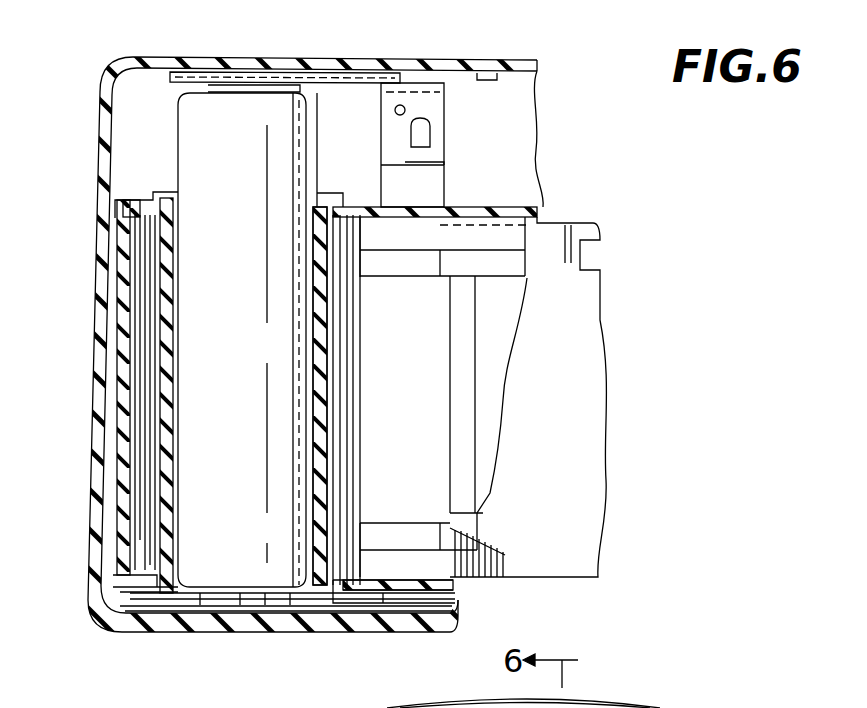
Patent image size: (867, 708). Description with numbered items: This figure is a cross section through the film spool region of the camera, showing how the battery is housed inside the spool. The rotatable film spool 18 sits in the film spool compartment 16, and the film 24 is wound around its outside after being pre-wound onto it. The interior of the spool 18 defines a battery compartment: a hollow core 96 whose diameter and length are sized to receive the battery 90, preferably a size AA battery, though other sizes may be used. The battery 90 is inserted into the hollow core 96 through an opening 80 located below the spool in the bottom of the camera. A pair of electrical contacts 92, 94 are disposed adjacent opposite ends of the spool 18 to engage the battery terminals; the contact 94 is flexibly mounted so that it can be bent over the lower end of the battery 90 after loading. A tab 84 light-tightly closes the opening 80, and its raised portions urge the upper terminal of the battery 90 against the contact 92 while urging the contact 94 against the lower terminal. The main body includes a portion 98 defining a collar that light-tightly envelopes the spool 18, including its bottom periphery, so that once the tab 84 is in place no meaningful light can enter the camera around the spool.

The film spool compartment 16 is at (136, 118).
The film spool 18 is at (170, 332).
The film 24 is at (143, 413).
The opening 80 is at (180, 606).
The tab 84 is at (250, 631).
The battery 90 is at (252, 324).
The electrical contact 92 is at (233, 77).
The electrical contact 94 is at (287, 610).
The hollow core 96 is at (318, 200).
The portion defining a collar 98 is at (150, 207).